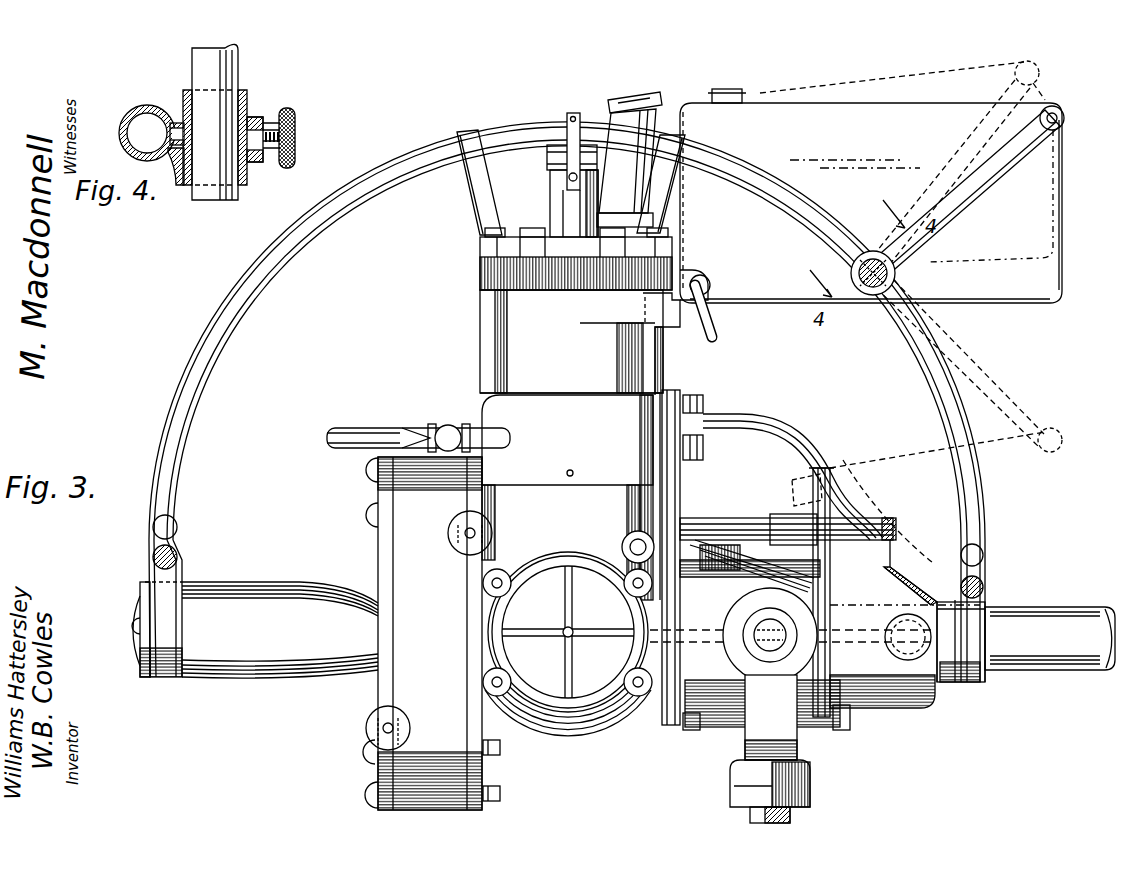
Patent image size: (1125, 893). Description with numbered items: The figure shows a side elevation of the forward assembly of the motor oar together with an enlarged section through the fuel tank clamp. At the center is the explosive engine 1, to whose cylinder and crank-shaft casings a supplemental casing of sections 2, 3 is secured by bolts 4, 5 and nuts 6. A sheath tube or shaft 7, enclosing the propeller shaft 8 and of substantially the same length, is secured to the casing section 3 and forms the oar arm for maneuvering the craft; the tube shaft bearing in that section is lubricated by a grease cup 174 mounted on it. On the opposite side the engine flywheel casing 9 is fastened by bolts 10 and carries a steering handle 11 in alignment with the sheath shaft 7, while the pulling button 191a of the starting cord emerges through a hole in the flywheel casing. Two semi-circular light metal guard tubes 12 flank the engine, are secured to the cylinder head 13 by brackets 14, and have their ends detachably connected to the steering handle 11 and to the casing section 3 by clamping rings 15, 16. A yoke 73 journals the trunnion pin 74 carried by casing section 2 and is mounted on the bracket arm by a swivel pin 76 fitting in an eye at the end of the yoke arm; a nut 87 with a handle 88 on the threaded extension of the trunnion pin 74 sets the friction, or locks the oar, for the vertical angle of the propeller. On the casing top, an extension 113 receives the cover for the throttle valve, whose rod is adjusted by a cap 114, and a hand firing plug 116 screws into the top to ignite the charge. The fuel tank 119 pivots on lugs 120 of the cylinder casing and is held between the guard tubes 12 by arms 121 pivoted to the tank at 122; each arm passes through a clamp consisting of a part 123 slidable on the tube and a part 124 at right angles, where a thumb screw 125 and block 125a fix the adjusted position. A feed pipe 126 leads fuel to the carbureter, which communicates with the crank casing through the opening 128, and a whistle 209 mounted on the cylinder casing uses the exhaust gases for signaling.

In FIG. 3, the explosive engine 1 is at (522, 342).
In FIG. 3, the supplemental casing section 2 is at (760, 472).
In FIG. 3, the casing section 3 is at (868, 566).
In FIG. 3, the bolts 4 is at (704, 447).
In FIG. 3, the bolts 5 is at (737, 520).
In FIG. 3, the nuts 6 is at (694, 394).
In FIG. 3, the sheath tube or shaft 7 is at (1087, 612).
In FIG. 3, the propeller shaft 8 is at (1110, 655).
In FIG. 3, the engine flywheel casing 9 is at (405, 668).
In FIG. 3, the bolts 10 is at (376, 515).
In FIG. 3, the steering handle 11 is at (278, 602).
In FIG. 4, the guard tubes 12 is at (145, 106).
In FIG. 3, the guard tubes 12 is at (305, 232).
In FIG. 3, the cylinder head 13 is at (478, 253).
In FIG. 3, the brackets 14 is at (482, 198).
In FIG. 3, the clamping ring 15 is at (168, 612).
In FIG. 3, the clamping ring 16 is at (975, 625).
In FIG. 3, the yoke 73 is at (782, 742).
In FIG. 3, the trunnion pin 74 is at (770, 651).
In FIG. 3, the swivel pin 76 is at (792, 814).
In FIG. 3, the nut 87 is at (740, 614).
In FIG. 3, the handle 88 is at (770, 690).
In FIG. 3, the extension of the casing top 113 is at (558, 199).
In FIG. 3, the cap 114 is at (548, 156).
In FIG. 3, the hand firing plug 116 is at (625, 113).
In FIG. 3, the fuel tank 119 is at (1048, 225).
In FIG. 3, the lugs 120 is at (707, 282).
In FIG. 4, the arms 121 is at (222, 74).
In FIG. 3, the arms 121 is at (962, 207).
In FIG. 3, the pivot 122 is at (1063, 115).
In FIG. 4, the clamp part 123 is at (126, 118).
In FIG. 4, the clamp part 124 is at (250, 112).
In FIG. 4, the thumb screw 125 is at (296, 135).
In FIG. 3, the thumb screw 125 is at (862, 296).
In FIG. 4, the block 125a is at (181, 130).
In FIG. 3, the feed pipe 126 is at (716, 325).
In FIG. 3, the opening 128 is at (628, 541).
In FIG. 3, the grease cup 174 is at (896, 633).
In FIG. 3, the pulling button 191a is at (402, 726).
In FIG. 3, the whistle 209 is at (372, 428).